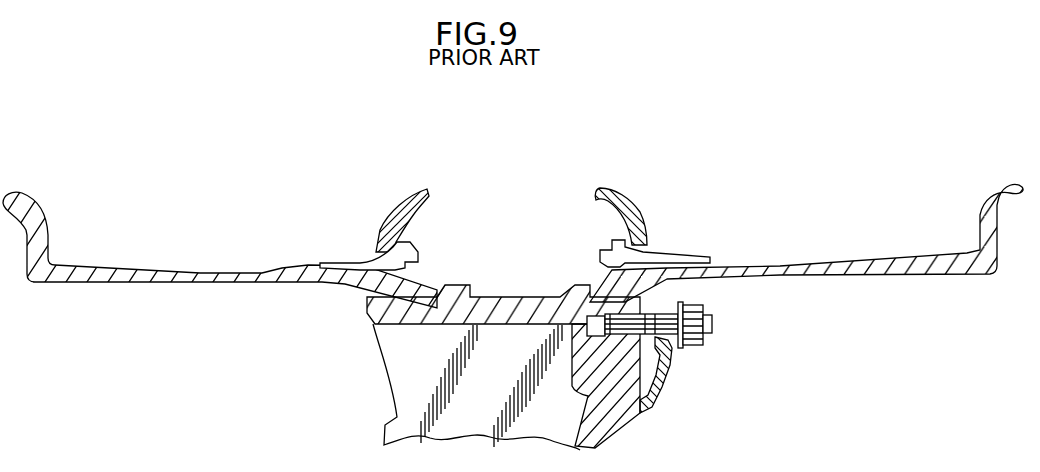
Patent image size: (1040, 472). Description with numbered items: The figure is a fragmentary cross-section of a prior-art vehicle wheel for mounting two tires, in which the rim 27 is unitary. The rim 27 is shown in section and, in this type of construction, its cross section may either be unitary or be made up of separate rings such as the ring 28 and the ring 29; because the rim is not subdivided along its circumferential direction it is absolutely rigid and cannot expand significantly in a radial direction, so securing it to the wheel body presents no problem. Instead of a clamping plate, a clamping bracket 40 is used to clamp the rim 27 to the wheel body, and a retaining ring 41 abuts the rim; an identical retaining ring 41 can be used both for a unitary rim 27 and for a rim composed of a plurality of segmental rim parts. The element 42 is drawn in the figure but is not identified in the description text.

The rim 27 is at (60, 282).
The ring 28 is at (426, 190).
The ring 29 is at (413, 258).
The clamping bracket 40 is at (665, 383).
The retaining ring 41 is at (450, 285).
The brake drum 42 is at (566, 372).